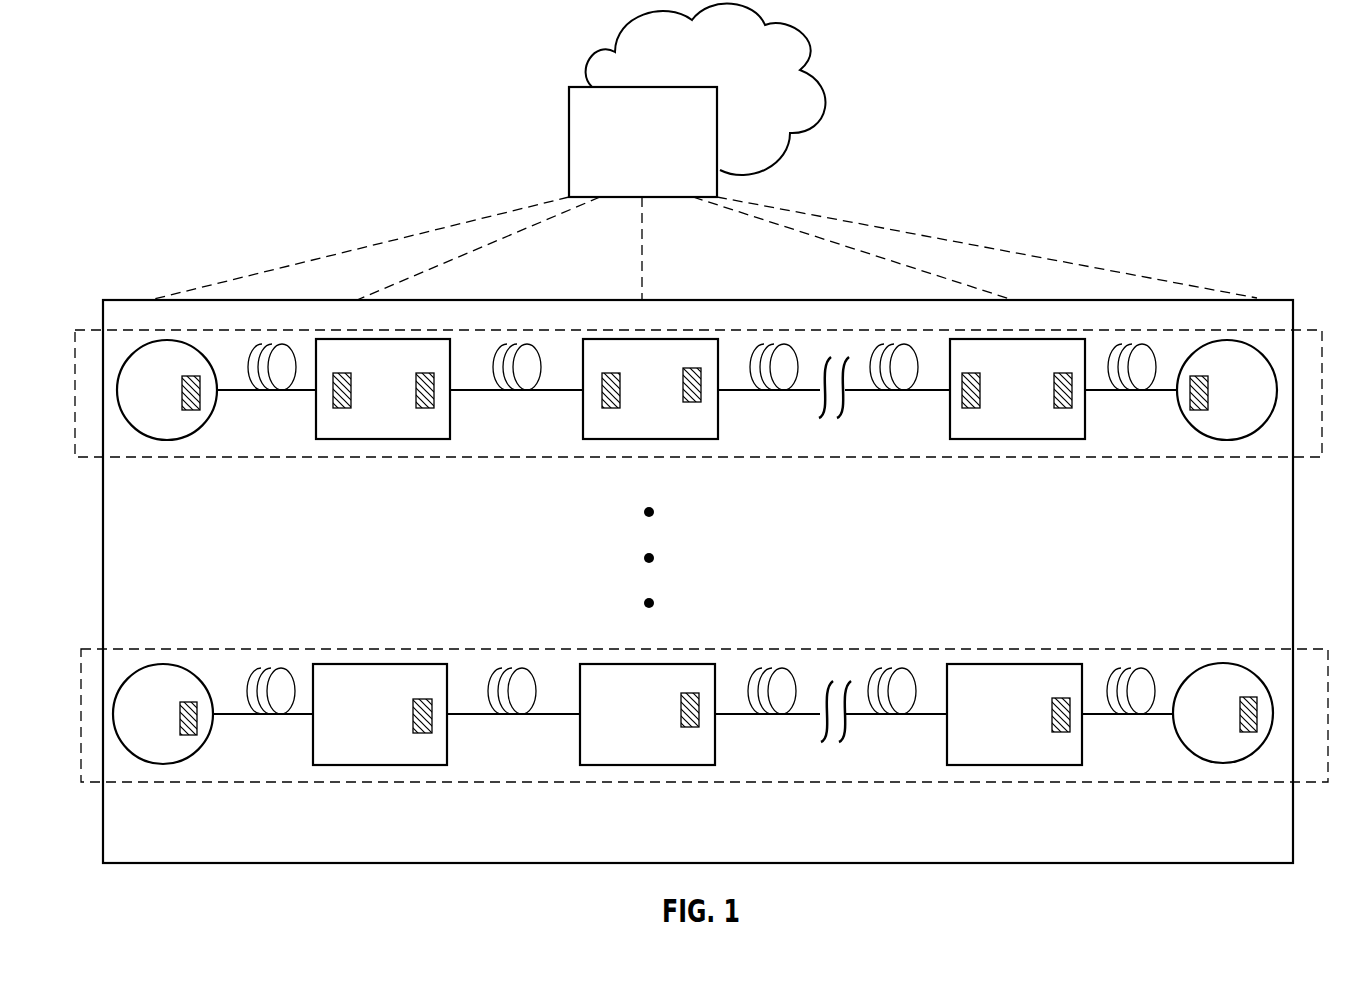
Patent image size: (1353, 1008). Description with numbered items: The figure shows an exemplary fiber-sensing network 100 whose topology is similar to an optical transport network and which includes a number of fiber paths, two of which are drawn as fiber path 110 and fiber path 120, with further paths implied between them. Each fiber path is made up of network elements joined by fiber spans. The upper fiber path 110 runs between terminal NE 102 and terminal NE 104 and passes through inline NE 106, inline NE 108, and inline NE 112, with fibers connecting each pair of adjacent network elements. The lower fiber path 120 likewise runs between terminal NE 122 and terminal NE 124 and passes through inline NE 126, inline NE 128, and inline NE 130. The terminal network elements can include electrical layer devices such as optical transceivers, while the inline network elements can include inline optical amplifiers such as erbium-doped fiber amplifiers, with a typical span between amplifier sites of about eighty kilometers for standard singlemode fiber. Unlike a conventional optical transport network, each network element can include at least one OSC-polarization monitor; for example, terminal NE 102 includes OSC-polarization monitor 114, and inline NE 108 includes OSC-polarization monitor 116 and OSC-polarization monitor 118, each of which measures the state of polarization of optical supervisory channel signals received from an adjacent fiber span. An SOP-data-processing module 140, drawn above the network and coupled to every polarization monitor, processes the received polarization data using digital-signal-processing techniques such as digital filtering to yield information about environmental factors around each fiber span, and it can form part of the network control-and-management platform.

The fiber-sensing network 100 is at (177, 191).
The terminal NE 102 is at (155, 440).
The terminal NE 104 is at (1227, 440).
The inline NE 106 is at (367, 439).
The inline NE 108 is at (667, 439).
The fiber path 110 is at (482, 457).
The inline NE 112 is at (1018, 439).
The OSC-polarization monitor 114 is at (182, 398).
The OSC-polarization monitor 116 is at (611, 373).
The OSC-polarization monitor 118 is at (692, 402).
The fiber path 120 is at (760, 648).
The terminal NE 122 is at (153, 664).
The terminal NE 124 is at (1250, 665).
The inline NE 126 is at (363, 765).
The inline NE 128 is at (663, 765).
The inline NE 130 is at (1015, 765).
The SOP-data-processing module 140 is at (703, 152).